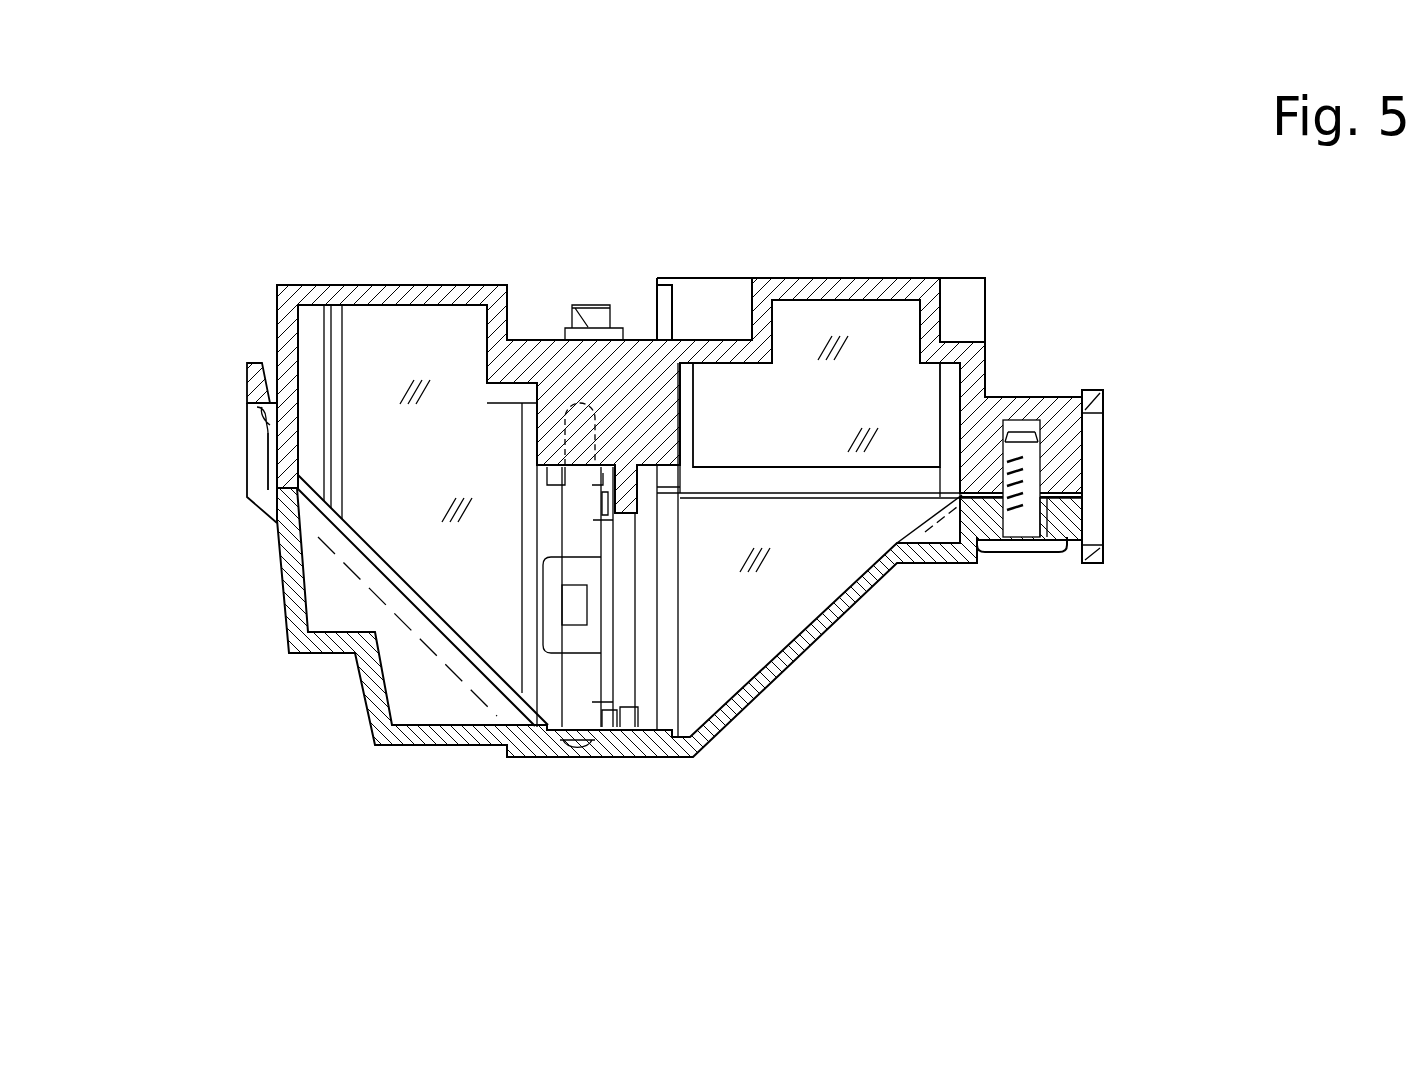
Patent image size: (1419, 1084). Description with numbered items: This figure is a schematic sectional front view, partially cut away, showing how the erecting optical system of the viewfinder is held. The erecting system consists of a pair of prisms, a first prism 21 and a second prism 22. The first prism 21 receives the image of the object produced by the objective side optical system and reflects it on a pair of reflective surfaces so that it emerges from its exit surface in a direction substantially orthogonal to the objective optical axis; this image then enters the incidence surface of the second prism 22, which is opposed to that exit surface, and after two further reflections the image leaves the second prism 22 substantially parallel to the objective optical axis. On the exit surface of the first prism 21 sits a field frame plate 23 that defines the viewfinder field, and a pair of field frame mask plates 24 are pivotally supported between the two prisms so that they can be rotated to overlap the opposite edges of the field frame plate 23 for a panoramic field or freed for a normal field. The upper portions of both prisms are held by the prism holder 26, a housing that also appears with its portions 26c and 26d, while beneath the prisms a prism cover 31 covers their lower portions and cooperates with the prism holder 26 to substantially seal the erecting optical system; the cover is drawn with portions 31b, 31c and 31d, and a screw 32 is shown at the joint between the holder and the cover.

The first prism 21 is at (435, 328).
The second prism 22 is at (867, 313).
The field frame plate 23 is at (607, 647).
The field frame mask plates 24 is at (578, 710).
The prism holder 26 is at (357, 300).
The hook portion of housing 26c is at (267, 415).
The screw boss of housing 26d is at (1030, 426).
The prism cover 31 is at (788, 660).
The left flange of mirror holder 31b is at (255, 480).
The right flange of mirror holder 31c is at (1082, 515).
The mounting portion of mirror holder 31d is at (1048, 510).
The fixing screw 32 is at (1018, 523).